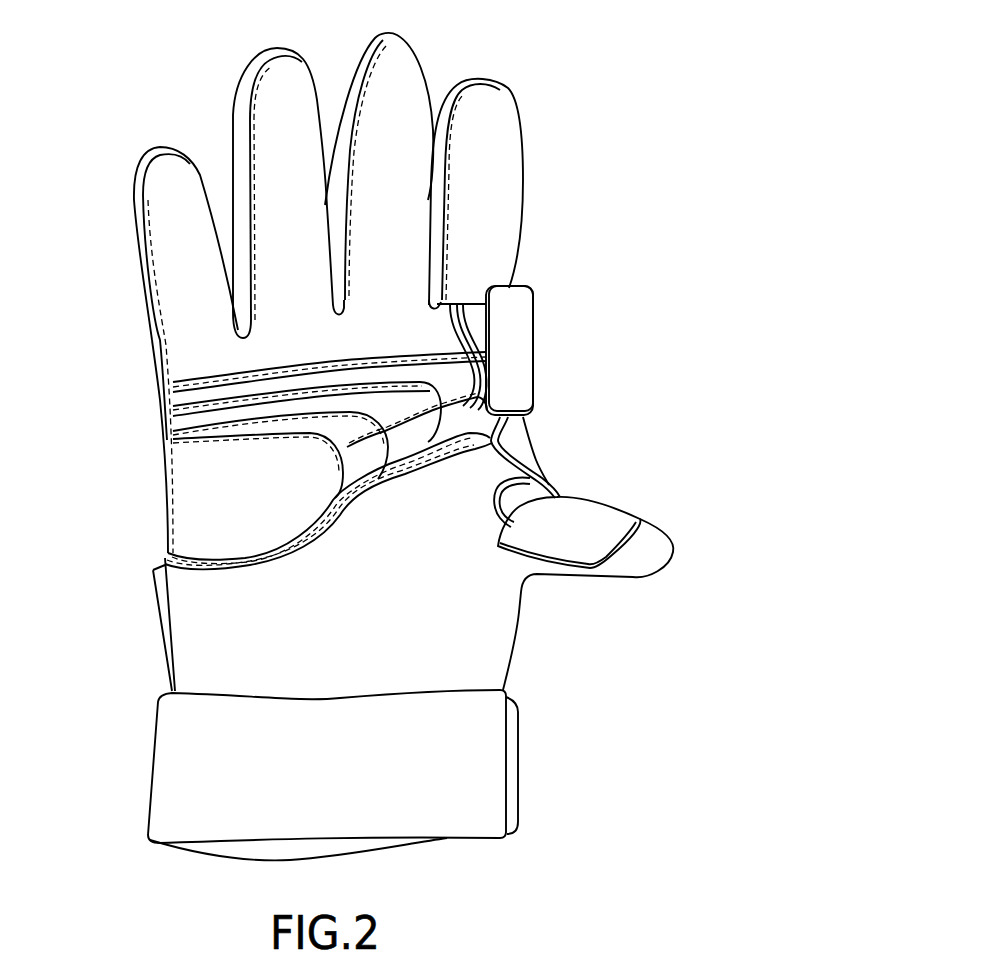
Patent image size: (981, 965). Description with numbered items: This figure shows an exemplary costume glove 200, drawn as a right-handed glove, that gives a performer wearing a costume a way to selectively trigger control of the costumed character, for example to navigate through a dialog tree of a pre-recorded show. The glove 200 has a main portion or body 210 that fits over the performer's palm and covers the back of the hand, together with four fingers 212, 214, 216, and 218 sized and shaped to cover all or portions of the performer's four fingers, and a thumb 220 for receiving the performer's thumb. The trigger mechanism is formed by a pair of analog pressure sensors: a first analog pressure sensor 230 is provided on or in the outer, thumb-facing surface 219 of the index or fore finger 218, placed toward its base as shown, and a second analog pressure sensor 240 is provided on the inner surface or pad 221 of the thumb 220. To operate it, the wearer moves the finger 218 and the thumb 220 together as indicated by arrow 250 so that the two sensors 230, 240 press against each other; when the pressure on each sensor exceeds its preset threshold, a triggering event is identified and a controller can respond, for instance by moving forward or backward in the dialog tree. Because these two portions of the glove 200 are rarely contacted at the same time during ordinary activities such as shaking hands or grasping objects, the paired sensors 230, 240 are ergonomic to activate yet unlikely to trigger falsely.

The costume glove 200 is at (593, 93).
The main portion or body 210 is at (162, 508).
The finger 212 is at (135, 237).
The finger 214 is at (234, 111).
The finger 216 is at (345, 78).
The index or fore finger 218 is at (524, 170).
The outer surface 219 is at (520, 284).
The thumb 220 is at (602, 577).
The inner surface or pad 221 is at (645, 524).
The first analog pressure sensor 230 is at (547, 338).
The second analog pressure sensor 240 is at (598, 498).
The arrow 250 is at (585, 467).